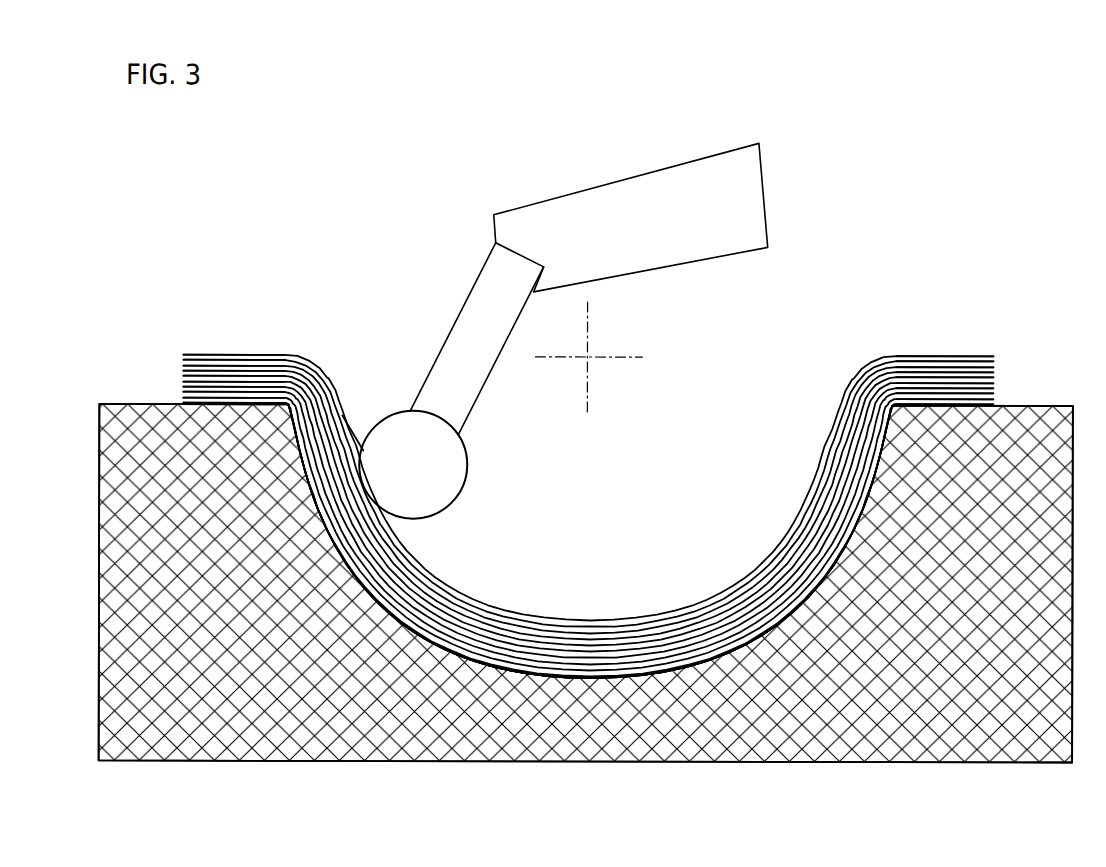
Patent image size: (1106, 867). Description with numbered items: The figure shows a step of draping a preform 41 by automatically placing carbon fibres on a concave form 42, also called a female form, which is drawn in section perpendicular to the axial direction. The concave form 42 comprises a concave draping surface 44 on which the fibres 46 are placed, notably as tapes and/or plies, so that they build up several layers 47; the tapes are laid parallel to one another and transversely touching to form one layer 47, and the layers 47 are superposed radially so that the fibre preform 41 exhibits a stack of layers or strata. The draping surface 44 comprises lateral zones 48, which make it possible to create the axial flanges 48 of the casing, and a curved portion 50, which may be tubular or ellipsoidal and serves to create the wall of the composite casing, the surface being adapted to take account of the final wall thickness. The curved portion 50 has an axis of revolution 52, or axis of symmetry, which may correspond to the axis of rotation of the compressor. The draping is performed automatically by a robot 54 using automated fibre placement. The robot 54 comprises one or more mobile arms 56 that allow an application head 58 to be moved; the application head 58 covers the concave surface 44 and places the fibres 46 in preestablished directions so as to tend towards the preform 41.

The preform 41 is at (768, 397).
The concave form 42 is at (478, 728).
The concave draping surface 44 is at (850, 528).
The fibres 46 is at (348, 421).
The layers 47 is at (512, 662).
The lateral zones 48 is at (258, 347).
The curved portion 50 is at (638, 540).
The axis of revolution 52 is at (588, 356).
The robot 54 is at (424, 212).
The mobile arm 56 is at (650, 248).
The application head 58 is at (427, 474).